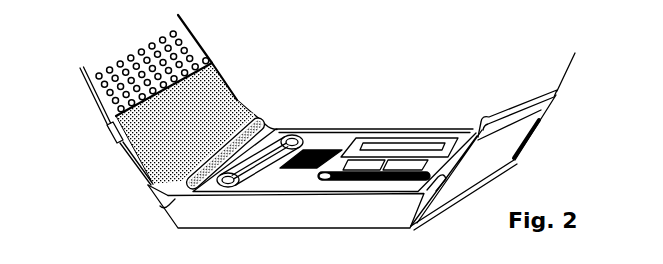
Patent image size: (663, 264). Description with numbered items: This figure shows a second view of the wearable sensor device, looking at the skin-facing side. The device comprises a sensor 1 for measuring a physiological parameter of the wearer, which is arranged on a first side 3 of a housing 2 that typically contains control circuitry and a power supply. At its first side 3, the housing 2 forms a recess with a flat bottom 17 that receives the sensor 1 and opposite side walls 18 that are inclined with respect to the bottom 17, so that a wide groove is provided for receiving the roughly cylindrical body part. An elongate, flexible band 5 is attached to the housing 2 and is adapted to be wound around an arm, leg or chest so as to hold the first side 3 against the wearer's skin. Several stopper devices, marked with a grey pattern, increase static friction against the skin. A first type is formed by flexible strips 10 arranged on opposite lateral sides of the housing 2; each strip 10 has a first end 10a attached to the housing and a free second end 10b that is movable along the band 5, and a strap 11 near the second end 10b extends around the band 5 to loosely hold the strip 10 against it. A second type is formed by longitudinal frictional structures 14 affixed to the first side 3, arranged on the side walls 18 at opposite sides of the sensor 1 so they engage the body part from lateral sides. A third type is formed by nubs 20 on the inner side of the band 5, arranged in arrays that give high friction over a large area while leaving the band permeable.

The sensor 1 is at (352, 136).
The housing 2 is at (267, 229).
The first side 3 is at (322, 136).
The band 5 is at (88, 92).
The flexible strip 10 is at (212, 63).
The first end 10a is at (230, 118).
The second end 10b is at (187, 46).
The strap 11 is at (112, 138).
The frictional structure 14 is at (172, 190).
The flat bottom 17 is at (368, 127).
The side wall 18 is at (257, 118).
The nub 20 is at (132, 57).